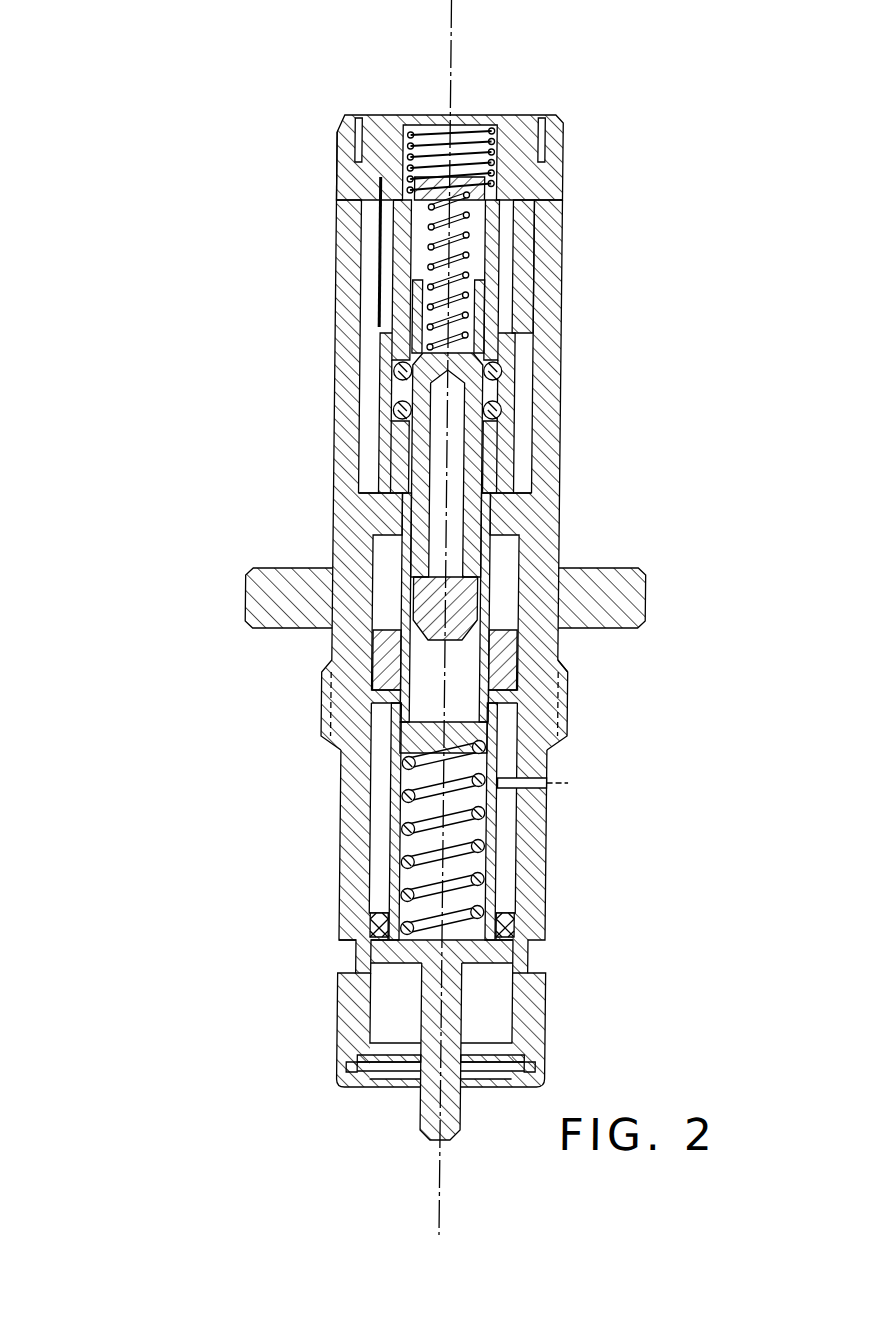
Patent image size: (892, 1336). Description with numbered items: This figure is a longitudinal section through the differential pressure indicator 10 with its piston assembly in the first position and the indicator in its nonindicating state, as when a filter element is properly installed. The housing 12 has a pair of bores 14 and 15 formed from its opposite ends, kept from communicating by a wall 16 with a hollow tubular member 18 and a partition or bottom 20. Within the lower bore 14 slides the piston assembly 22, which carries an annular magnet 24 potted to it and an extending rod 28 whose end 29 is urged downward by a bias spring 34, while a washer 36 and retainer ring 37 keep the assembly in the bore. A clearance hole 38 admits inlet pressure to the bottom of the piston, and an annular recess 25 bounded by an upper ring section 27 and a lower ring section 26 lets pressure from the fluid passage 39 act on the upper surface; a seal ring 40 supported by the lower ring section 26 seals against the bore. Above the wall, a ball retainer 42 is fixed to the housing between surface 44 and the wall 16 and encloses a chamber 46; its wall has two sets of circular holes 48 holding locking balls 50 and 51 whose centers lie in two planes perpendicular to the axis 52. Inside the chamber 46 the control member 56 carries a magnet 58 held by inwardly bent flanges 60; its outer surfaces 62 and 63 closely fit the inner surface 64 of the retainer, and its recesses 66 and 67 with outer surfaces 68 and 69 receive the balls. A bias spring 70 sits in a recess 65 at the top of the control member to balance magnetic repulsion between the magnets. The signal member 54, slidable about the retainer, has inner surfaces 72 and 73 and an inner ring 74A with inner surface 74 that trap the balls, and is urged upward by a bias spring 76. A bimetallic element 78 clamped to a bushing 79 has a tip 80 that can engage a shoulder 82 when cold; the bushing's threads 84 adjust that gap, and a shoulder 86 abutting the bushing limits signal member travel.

The differential pressure indicator 10 is at (425, 634).
The housing 12 is at (345, 630).
The bore 14 is at (378, 784).
The bore 15 is at (381, 211).
The wall 16 is at (356, 530).
The hollow tubular member 18 is at (378, 582).
The partition or bottom 20 is at (406, 735).
The piston assembly 22 is at (398, 826).
The annular magnet 24 is at (367, 681).
The annular recess 25 is at (549, 848).
The lower ring section 26 is at (388, 918).
The upper ring section 27 is at (571, 732).
The extending rod 28 is at (358, 995).
The end 29 is at (440, 1142).
The bias spring 34 is at (410, 852).
The washer 36 is at (358, 1030).
The retainer ring 37 is at (372, 1062).
The clearance hole 38 is at (402, 1075).
The fluid passage 39 is at (571, 785).
The seal ring 40 is at (358, 938).
The ball retainer 42 is at (503, 268).
The surface 44 is at (486, 590).
The chamber 46 is at (500, 200).
The circular holes 48 is at (506, 410).
The locking balls 50 is at (503, 428).
The locking balls 51 is at (506, 378).
The axis 52 is at (437, 634).
The signal member 54 is at (507, 118).
The control member 56 is at (524, 648).
The magnet 58 is at (496, 650).
The inwardly bent flanges 60 is at (570, 668).
The outer surface 62 is at (490, 472).
The outer surface 63 is at (530, 292).
The inner surface 64 is at (489, 190).
The recess 65 is at (381, 320).
The recess 66 is at (520, 500).
The recess 67 is at (503, 345).
The outer surface 68 is at (523, 535).
The outer surface 69 is at (503, 312).
The bias spring 70 is at (503, 252).
The inner surface 72 is at (378, 498).
The inner surface 73 is at (398, 412).
The inner surface 74 is at (385, 478).
The inner ring 74A is at (396, 445).
The bias spring 76 is at (373, 116).
The bimetallic element 78 is at (396, 262).
The bushing 79 is at (352, 141).
The tip 80 is at (386, 340).
The shoulder 82 is at (396, 357).
The threads 84 is at (352, 157).
The shoulder 86 is at (396, 284).